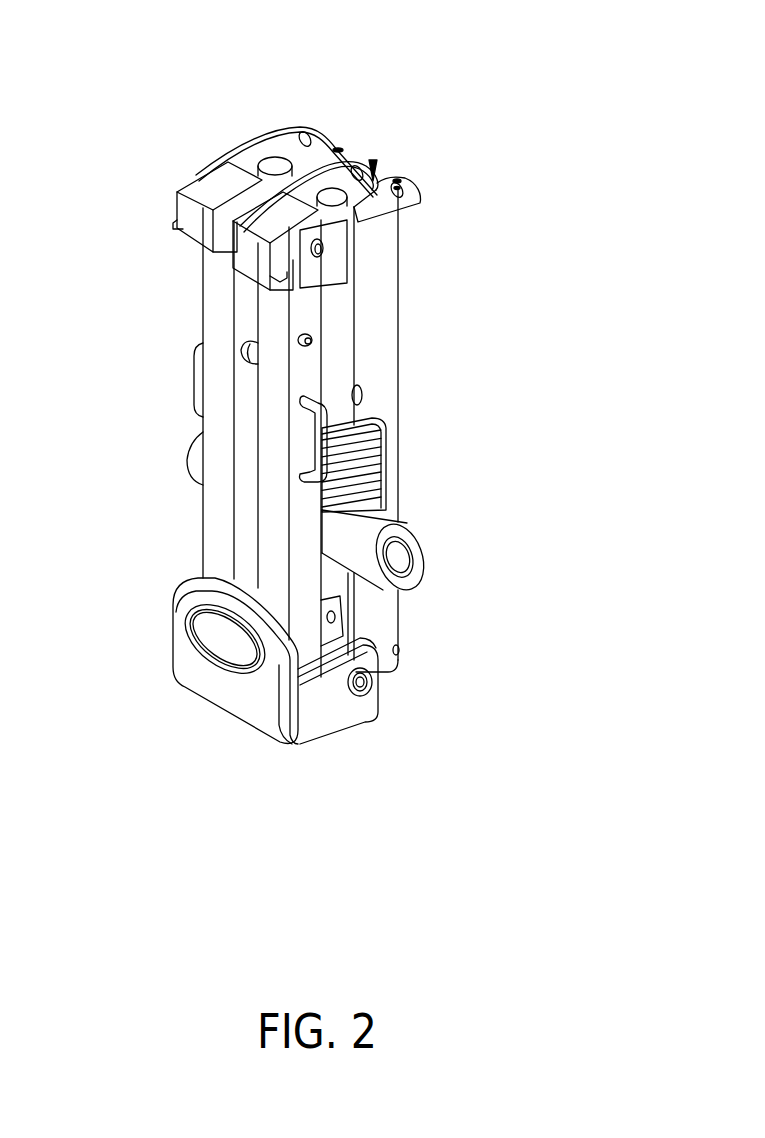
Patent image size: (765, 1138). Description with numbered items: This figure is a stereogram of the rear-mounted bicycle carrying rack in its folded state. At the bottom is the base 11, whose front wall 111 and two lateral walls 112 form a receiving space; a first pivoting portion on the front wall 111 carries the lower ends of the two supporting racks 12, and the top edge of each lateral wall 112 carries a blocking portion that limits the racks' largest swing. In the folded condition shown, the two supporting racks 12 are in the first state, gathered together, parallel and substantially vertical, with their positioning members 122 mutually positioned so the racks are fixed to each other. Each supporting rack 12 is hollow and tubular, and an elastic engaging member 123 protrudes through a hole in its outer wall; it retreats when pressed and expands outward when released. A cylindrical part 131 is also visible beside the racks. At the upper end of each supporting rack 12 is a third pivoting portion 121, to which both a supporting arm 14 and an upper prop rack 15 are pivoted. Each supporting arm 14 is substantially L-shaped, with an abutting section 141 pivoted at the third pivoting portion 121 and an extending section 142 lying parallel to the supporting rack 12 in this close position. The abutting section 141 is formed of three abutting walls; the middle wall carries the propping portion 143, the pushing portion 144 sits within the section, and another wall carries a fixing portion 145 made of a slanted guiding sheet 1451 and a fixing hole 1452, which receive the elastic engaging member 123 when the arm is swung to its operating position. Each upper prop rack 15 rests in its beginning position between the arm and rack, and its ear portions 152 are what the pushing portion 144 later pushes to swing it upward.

The base 11 is at (276, 731).
The front wall 111 is at (227, 690).
The lateral wall 112 is at (325, 705).
The supporting rack 12 is at (278, 424).
The third pivoting portion 121 is at (322, 253).
The positioning member 122 is at (250, 350).
The elastic engaging member 123 is at (303, 343).
The tube 131 is at (362, 537).
The supporting arm 14 is at (387, 344).
The abutting section 141 is at (358, 222).
The extending section 142 is at (387, 392).
The propping portion 143 is at (375, 160).
The pushing portion 144 is at (337, 150).
The fixing portion 145 is at (492, 168).
The guiding sheet 1451 is at (397, 181).
The fixing hole 1452 is at (397, 188).
The upper prop rack 15 is at (288, 419).
The ear portion 152 is at (288, 233).